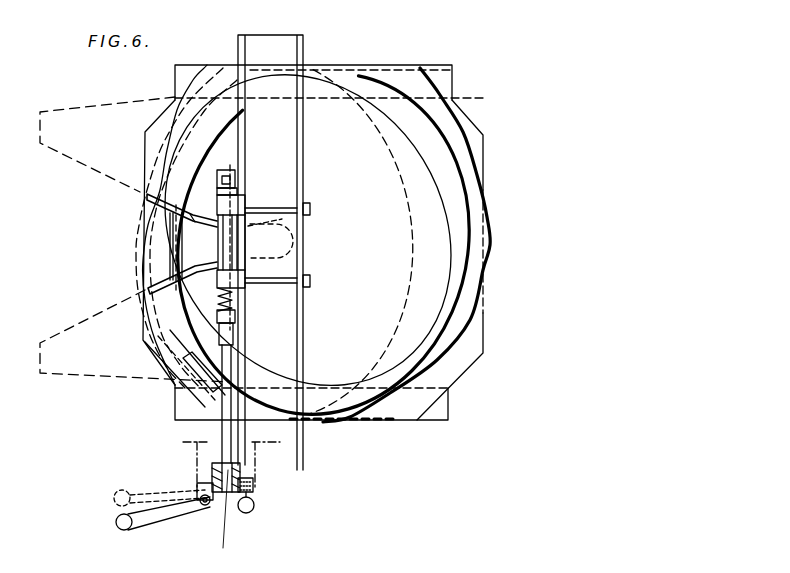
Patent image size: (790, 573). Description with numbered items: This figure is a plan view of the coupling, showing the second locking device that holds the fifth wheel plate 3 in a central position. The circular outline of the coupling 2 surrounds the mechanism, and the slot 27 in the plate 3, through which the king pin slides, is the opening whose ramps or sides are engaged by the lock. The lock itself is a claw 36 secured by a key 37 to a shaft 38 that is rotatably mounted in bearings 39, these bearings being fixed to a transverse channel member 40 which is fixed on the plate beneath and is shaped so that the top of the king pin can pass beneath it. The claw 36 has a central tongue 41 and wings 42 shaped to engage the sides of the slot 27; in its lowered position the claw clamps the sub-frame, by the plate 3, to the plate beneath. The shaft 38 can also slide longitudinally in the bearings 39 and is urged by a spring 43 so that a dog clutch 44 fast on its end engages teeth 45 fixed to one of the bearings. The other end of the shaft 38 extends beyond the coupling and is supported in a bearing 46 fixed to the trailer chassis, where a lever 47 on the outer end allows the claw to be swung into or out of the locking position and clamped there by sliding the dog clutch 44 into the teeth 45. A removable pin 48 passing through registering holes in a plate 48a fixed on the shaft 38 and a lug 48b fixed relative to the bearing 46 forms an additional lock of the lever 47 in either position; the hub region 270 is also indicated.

The drum housing 2 is at (140, 258).
The fifth wheel plate 3 is at (120, 355).
The slot 27 is at (304, 210).
The claw 36 is at (160, 236).
The key 37 is at (218, 240).
The shaft 38 is at (224, 354).
The bearings 39 is at (245, 203).
The transverse channel member 40 is at (290, 147).
The central tongue 41 is at (178, 222).
The wings 42 is at (165, 200).
The spring 43 is at (246, 324).
The dog clutch 44 is at (227, 177).
The teeth 45 is at (237, 190).
The bearing 46 is at (236, 463).
The lever 47 is at (157, 517).
The removable pin 48 is at (249, 510).
The plate 48a is at (258, 492).
The lug 48b is at (255, 485).
The hub 270 is at (118, 178).